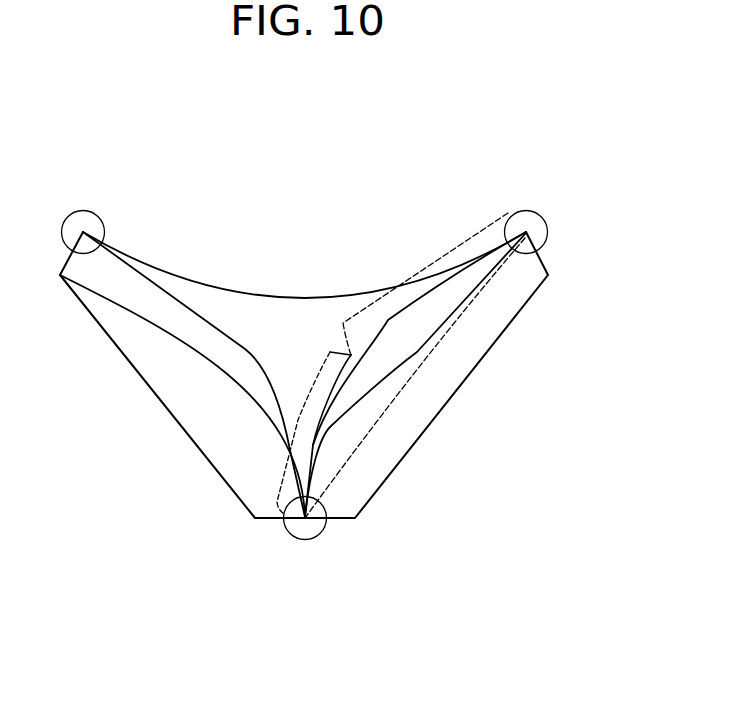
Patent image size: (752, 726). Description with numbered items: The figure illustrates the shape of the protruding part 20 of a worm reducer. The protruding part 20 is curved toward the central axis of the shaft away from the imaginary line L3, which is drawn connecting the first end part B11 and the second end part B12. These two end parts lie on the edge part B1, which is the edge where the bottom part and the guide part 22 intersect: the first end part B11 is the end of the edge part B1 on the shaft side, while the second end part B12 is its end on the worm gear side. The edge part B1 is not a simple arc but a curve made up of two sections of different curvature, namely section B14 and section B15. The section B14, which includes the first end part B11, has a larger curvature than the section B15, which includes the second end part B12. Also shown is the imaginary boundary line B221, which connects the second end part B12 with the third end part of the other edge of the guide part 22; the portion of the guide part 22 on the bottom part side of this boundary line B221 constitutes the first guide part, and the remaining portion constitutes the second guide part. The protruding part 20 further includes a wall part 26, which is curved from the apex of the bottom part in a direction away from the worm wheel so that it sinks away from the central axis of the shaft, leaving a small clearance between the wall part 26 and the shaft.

The protruding part 20 is at (457, 138).
The guide part 22 is at (182, 401).
The wall part 26 is at (206, 281).
The edge part B1 is at (350, 355).
The first end part B11 is at (548, 232).
The second end part B12 is at (303, 539).
The section B14 is at (420, 260).
The section B15 is at (293, 423).
The imaginary boundary line B221 is at (123, 308).
The imaginary line L3 is at (380, 420).